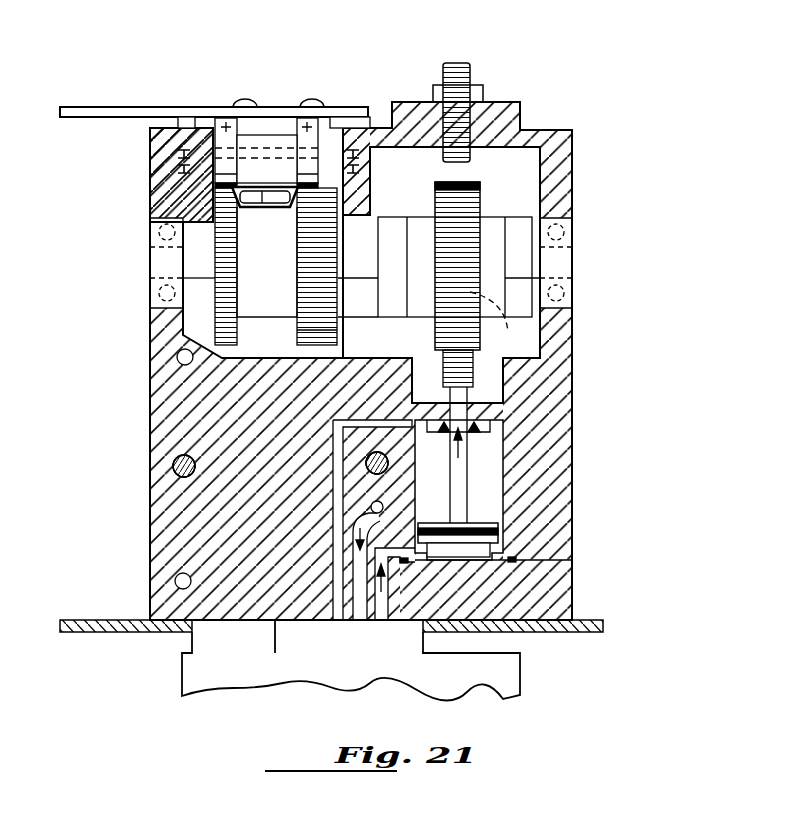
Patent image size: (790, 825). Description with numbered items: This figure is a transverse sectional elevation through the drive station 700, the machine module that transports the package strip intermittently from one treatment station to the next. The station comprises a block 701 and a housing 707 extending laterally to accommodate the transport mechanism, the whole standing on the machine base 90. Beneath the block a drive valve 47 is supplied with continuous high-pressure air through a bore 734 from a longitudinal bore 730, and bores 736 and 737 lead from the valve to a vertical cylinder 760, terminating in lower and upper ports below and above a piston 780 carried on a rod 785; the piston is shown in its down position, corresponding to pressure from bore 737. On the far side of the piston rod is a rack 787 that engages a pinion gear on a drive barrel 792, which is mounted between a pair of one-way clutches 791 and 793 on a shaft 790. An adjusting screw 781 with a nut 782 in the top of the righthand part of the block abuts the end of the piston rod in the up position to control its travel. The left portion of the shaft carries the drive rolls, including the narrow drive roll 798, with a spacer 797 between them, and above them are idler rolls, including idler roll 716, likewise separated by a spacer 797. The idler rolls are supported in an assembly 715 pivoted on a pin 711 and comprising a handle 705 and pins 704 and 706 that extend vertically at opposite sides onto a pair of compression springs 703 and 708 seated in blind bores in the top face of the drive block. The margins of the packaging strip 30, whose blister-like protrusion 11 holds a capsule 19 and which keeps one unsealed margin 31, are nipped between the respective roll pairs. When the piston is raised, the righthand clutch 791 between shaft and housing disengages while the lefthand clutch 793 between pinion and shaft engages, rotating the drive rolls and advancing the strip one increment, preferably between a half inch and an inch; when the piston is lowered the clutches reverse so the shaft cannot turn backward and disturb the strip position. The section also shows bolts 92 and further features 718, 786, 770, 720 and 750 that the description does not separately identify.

The drive station 700 is at (402, 342).
The block 701 is at (157, 537).
The compression spring 703 is at (165, 162).
The pin 704 is at (178, 119).
The handle 705 is at (195, 110).
The pin 706 is at (350, 120).
The housing 707 is at (568, 380).
The compression spring 708 is at (367, 158).
The pin 711 is at (178, 192).
The assembly 715 is at (277, 147).
The idler roll 716 is at (307, 123).
The pinion 718 is at (225, 118).
The capsule 19 is at (253, 198).
The blister-like protrusion 11 is at (280, 203).
The combined strip 30 is at (312, 190).
The margin 31 is at (317, 190).
The shaft 790 is at (362, 272).
The one-way clutch 791 is at (563, 205).
The drive barrel 792 is at (488, 227).
The one-way clutch 793 is at (395, 233).
The spacer 797 is at (252, 138).
The narrow drive roll 798 is at (222, 313).
The adjusting screw 781 is at (462, 66).
The nut 782 is at (480, 92).
The top wall 786 is at (550, 128).
The rack 787 is at (475, 368).
The rod 785 is at (467, 468).
The piston 780 is at (505, 532).
The vertical cylinder 760 is at (497, 452).
The bore 770 is at (177, 358).
The port 720 is at (171, 462).
The bolts 92 is at (171, 472).
The longitudinal bore 730 is at (383, 508).
The bore 734 is at (360, 610).
The bore 736 is at (380, 612).
The bore 737 is at (335, 570).
The bore 750 is at (174, 578).
The machine base 90 is at (598, 618).
The drive valve 47 is at (507, 677).